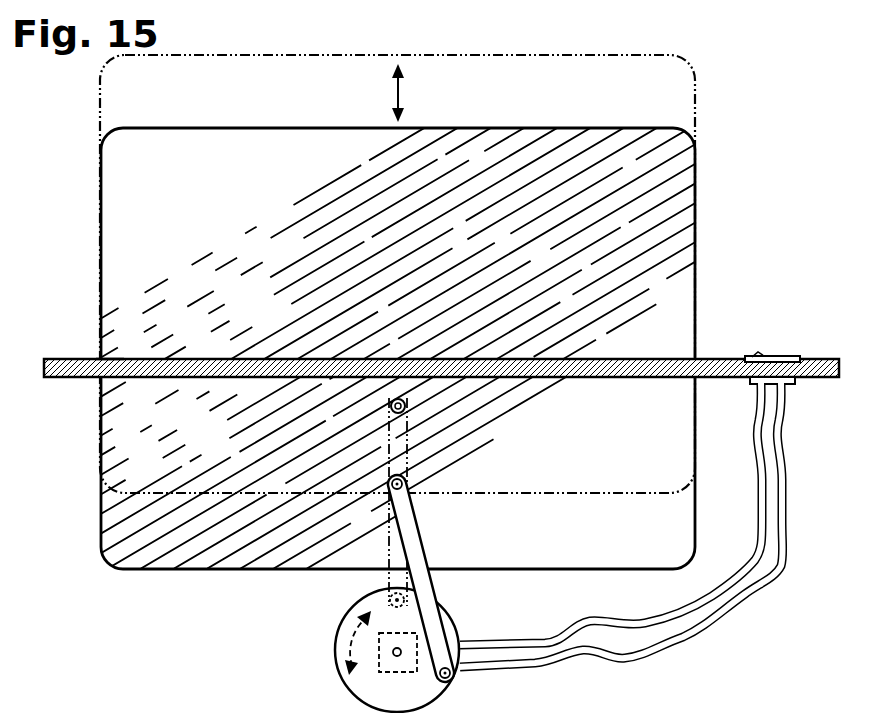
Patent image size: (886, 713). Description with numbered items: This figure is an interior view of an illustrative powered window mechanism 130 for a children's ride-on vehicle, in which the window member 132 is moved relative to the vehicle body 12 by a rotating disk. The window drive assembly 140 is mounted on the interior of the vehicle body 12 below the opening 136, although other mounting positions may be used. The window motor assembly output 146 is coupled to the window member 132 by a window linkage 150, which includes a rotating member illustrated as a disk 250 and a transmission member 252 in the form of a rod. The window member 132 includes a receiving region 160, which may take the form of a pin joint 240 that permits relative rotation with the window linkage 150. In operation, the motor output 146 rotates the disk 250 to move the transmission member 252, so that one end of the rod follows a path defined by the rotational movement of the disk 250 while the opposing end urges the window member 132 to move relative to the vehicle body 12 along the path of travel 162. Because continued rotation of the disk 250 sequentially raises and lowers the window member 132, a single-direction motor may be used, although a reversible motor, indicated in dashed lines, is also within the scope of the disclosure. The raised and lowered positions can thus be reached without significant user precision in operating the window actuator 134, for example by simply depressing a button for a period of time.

The vehicle body 12 is at (66, 353).
The powered window mechanism 130 is at (734, 241).
The window member 132 is at (470, 124).
The window actuator 134 is at (760, 355).
The opening 136 is at (110, 357).
The window drive assembly 140 is at (316, 652).
The window motor assembly output 146 is at (396, 657).
The window linkage 150 is at (458, 596).
The receiving region 160 is at (416, 406).
The path of travel 162 is at (396, 92).
The pin joint 240 is at (392, 412).
The disk 250 is at (462, 633).
The transmission member 252 is at (413, 545).